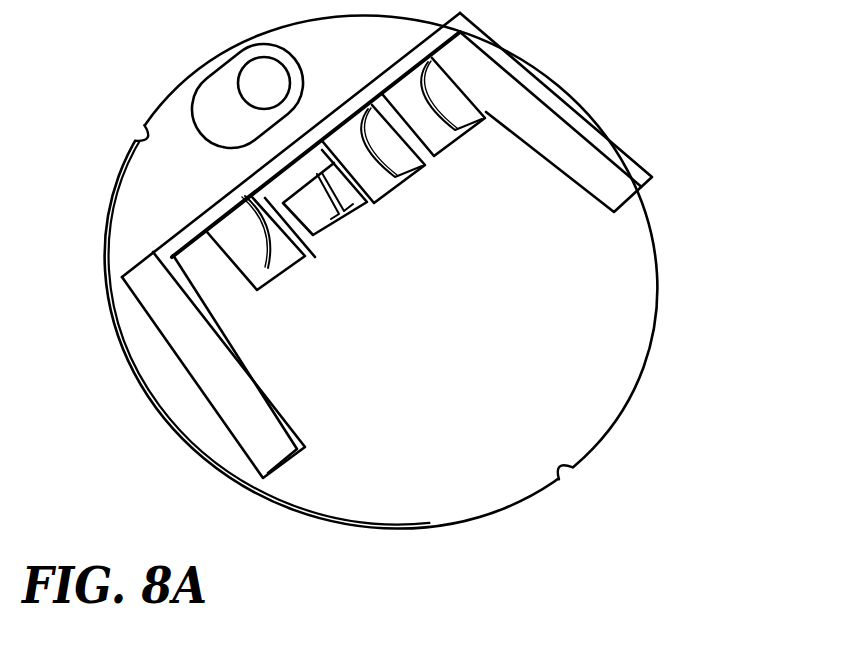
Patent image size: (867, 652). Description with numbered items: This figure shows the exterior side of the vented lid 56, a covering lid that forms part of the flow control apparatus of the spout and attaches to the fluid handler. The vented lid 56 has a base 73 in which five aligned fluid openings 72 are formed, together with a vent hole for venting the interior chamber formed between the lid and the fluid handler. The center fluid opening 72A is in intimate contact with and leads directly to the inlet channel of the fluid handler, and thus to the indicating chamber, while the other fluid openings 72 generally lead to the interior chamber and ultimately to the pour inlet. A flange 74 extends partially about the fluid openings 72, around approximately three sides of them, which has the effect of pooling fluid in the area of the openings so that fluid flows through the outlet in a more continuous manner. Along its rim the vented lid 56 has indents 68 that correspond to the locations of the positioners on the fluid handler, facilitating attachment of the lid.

The vented lid 56 is at (703, 267).
The indents 68 is at (133, 131).
The fluid openings 72 is at (534, 161).
The center fluid opening 72A is at (326, 212).
The base 73 is at (481, 419).
The flange 74 is at (515, 98).